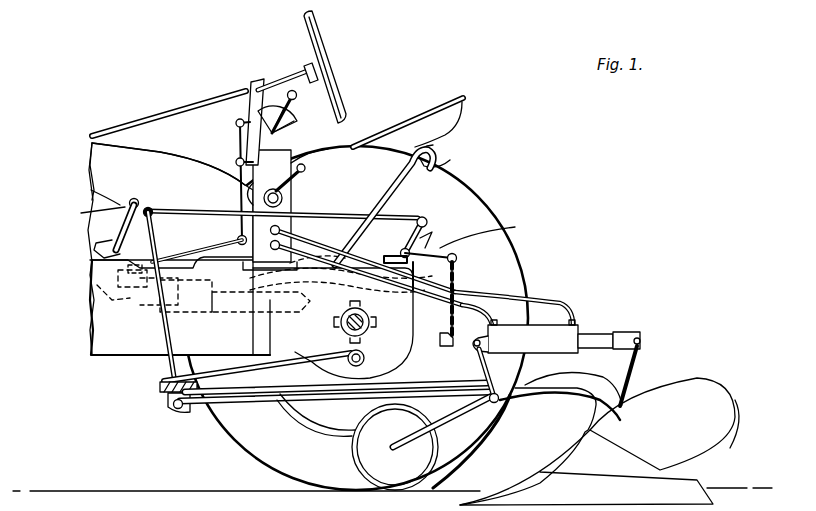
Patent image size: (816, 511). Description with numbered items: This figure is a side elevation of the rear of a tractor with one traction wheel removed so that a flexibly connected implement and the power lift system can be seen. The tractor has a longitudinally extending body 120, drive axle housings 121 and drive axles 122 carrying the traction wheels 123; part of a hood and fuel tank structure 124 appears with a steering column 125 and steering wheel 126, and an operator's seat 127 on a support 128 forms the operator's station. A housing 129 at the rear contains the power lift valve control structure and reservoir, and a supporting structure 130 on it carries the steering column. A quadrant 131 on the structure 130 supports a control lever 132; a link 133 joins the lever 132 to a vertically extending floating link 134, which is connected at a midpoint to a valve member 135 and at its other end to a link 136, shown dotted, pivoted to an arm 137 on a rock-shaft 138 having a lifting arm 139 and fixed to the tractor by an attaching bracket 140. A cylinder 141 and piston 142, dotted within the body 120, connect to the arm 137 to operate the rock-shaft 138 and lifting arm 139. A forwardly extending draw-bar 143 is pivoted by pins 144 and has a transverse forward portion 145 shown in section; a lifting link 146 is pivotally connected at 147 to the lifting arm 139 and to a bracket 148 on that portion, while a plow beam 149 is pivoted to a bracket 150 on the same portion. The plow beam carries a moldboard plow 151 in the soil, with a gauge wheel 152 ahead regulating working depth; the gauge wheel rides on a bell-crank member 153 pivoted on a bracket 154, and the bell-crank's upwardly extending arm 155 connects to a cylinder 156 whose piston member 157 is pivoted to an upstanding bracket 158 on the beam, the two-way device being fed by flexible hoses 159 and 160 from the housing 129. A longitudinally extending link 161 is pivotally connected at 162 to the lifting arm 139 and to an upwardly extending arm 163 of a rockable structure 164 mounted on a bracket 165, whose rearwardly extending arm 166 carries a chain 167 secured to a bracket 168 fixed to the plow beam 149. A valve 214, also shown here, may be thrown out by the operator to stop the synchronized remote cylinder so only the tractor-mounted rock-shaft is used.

The body 120 is at (100, 338).
The drive axle housings 121 is at (355, 306).
The drive axles 122 is at (345, 328).
The traction wheels 123 is at (470, 192).
The hood and fuel tank structure 124 is at (97, 160).
The steering column 125 is at (192, 102).
The steering wheel 126 is at (322, 31).
The operator's seat 127 is at (452, 98).
The support 128 is at (447, 160).
The housing 129 is at (285, 165).
The supporting structure 130 is at (262, 85).
The quadrant 131 is at (296, 125).
The control lever 132 is at (291, 99).
The link 133 is at (254, 90).
The floating link 134 is at (250, 190).
The valve member 135 is at (238, 160).
The link 136 is at (190, 255).
The arm 137 is at (95, 292).
The rock-shaft 138 is at (96, 246).
The lifting arm 139 is at (140, 225).
The attaching bracket 140 is at (128, 268).
The cylinder 141 is at (180, 310).
The piston 142 is at (135, 300).
The draw-bar 143 is at (243, 375).
The pins 144 is at (362, 353).
The transverse forward portion 145 is at (168, 402).
The lifting link 146 is at (165, 360).
The pivotal connection 147 is at (150, 206).
The bracket 148 is at (160, 387).
The plow beam 149 is at (318, 405).
The bracket 150 is at (178, 410).
The moldboard plow 151 is at (703, 385).
The gauge wheel 152 is at (352, 465).
The bell-crank member 153 is at (460, 420).
The bracket 154 is at (510, 398).
The upwardly extending arm 155 is at (486, 365).
The cylinder 156 is at (545, 325).
The piston member 157 is at (608, 333).
The upstanding bracket 158 is at (645, 335).
The flexible hose 159 is at (513, 297).
The flexible hose 160 is at (478, 295).
The longitudinally extending link 161 is at (335, 195).
The pivotal connection 162 is at (126, 199).
The upwardly extending arm 163 is at (426, 225).
The rockable structure 164 is at (422, 246).
The bracket 165 is at (385, 262).
The rearwardly extending arm 166 is at (500, 238).
The chain 167 is at (450, 309).
The bracket 168 is at (440, 340).
The valve 214 is at (286, 200).